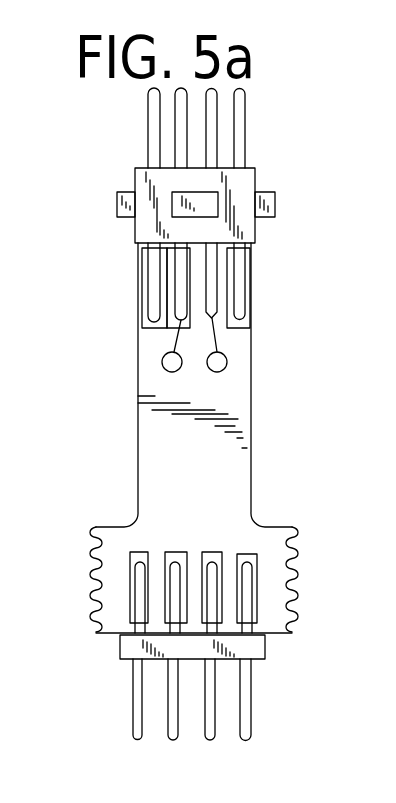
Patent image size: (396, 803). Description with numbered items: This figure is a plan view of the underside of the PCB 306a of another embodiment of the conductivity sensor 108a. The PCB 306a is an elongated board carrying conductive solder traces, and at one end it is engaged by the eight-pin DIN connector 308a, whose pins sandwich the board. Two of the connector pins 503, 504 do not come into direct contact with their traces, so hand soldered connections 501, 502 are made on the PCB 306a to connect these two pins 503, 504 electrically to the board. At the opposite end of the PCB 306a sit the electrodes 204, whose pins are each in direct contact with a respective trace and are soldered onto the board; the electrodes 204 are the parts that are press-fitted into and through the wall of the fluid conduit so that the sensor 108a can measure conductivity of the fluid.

The conductivity sensor 108a is at (284, 183).
The 8-pin DIN connector 308a is at (135, 170).
The PCB 306a is at (155, 468).
The hand soldered connection 501 is at (152, 340).
The hand soldered connection 502 is at (210, 337).
The pin 503 is at (178, 282).
The pin 504 is at (213, 293).
The electrodes 204 is at (120, 648).